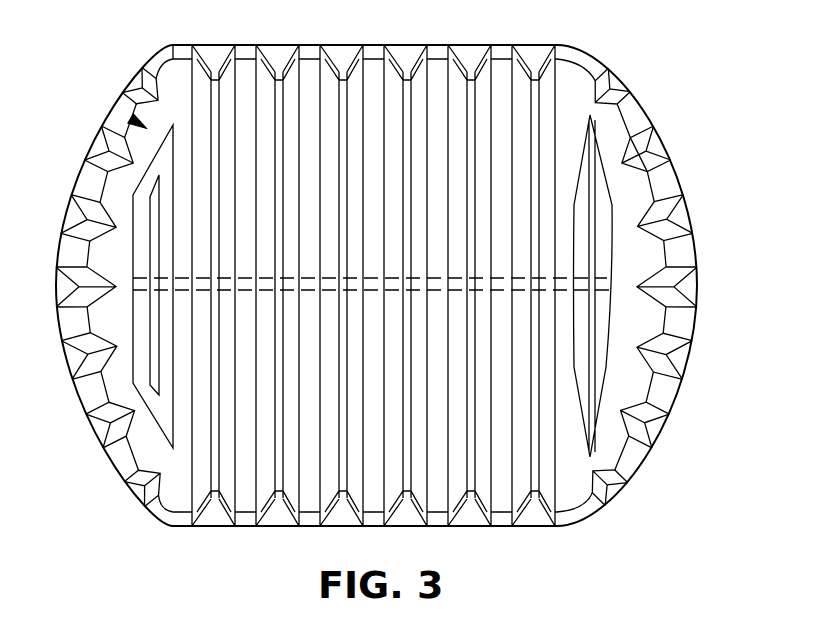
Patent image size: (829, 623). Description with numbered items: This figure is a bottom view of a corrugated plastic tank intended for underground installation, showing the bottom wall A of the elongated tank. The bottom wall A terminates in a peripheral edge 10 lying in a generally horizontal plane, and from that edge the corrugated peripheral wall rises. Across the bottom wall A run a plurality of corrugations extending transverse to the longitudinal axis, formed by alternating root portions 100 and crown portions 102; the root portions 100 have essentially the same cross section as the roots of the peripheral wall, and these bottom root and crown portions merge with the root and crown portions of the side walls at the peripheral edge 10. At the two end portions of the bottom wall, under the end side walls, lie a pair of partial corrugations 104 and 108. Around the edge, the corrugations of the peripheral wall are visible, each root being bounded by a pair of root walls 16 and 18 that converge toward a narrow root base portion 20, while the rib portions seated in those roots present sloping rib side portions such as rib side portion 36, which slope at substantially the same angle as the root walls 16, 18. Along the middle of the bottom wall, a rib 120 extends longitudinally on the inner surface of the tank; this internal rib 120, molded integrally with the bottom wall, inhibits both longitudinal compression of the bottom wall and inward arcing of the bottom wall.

The peripheral edge 10 is at (172, 46).
The root wall 16 is at (622, 96).
The root wall 18 is at (596, 96).
The root base portion 20 is at (599, 96).
The rib side portion 36 is at (413, 513).
The root portion 100 is at (228, 494).
The crown portion 102 is at (247, 496).
The partial corrugation 104 is at (170, 422).
The partial corrugation 108 is at (607, 385).
The rib 120 is at (500, 284).
The bottom wall A is at (146, 128).